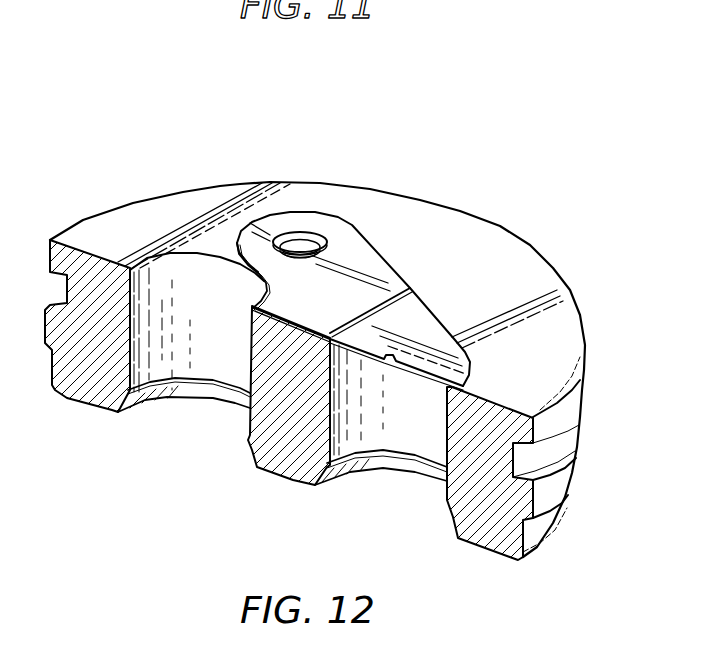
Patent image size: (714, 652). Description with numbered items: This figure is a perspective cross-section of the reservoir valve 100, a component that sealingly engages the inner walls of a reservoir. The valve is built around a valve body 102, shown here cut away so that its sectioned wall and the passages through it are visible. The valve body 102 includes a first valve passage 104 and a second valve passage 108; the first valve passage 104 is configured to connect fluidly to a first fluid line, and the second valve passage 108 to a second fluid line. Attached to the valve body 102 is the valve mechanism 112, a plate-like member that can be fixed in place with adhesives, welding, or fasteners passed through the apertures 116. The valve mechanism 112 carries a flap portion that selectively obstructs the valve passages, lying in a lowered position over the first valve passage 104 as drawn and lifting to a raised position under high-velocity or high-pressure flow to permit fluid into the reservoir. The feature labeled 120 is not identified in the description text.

The reservoir valve 100 is at (317, 278).
The valve body 102 is at (147, 283).
The first valve passage 104 is at (390, 435).
The second valve passage 108 is at (184, 369).
The valve mechanism 112 is at (366, 286).
The apertures 116 is at (297, 201).
The notch on cut edge 120 is at (413, 334).